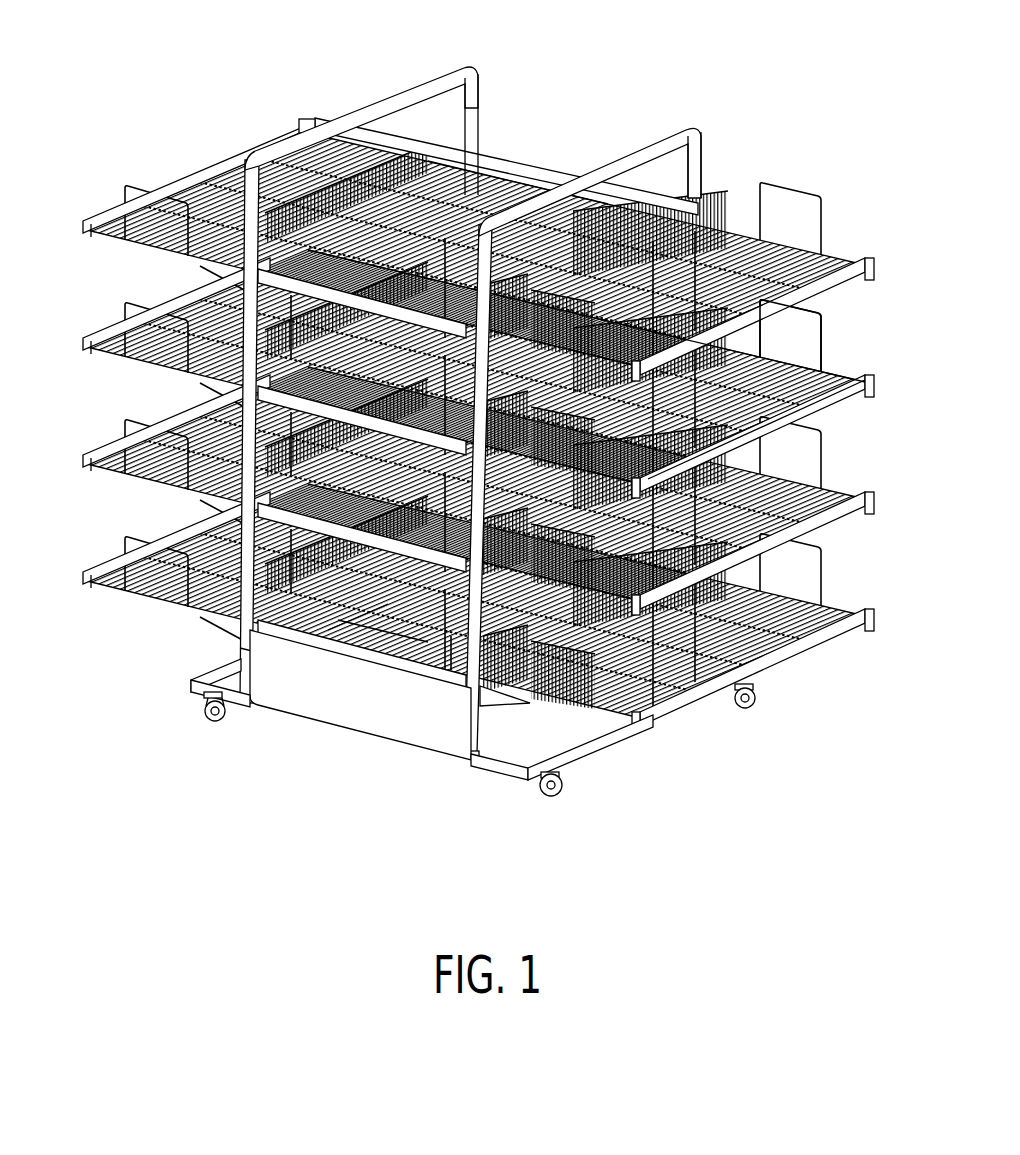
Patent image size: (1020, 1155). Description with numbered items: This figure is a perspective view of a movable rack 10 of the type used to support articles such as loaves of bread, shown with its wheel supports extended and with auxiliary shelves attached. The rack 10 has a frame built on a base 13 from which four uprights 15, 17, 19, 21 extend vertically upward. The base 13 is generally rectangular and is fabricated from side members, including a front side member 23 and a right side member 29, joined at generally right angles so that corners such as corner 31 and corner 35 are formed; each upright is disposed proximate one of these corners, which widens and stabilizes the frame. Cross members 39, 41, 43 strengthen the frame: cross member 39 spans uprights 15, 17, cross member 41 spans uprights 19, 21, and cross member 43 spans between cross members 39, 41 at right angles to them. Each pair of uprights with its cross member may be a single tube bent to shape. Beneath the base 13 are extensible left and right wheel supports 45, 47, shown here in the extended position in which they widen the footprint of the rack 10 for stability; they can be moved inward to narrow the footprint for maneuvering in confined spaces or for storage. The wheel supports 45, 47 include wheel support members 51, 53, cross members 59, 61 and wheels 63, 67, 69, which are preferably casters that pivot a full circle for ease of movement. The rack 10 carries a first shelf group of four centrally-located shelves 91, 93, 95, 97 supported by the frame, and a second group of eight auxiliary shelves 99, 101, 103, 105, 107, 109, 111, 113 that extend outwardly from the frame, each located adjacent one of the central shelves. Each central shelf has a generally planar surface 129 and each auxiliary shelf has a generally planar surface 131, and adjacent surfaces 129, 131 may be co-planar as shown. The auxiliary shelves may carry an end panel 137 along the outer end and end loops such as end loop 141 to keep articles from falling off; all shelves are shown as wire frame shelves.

The movable rack 10 is at (197, 57).
The base 13 is at (293, 710).
The upright 15 is at (238, 288).
The upright 17 is at (473, 92).
The upright 19 is at (463, 630).
The upright 21 is at (697, 158).
The front side member 23 is at (447, 730).
The right side member 29 is at (510, 707).
The corner 31 is at (233, 647).
The corner 35 is at (473, 710).
The cross member 39 is at (428, 68).
The cross member 41 is at (653, 123).
The cross member 43 is at (483, 145).
The left wheel support 45 is at (167, 681).
The right wheel support 47 is at (680, 723).
The wheel support member 51 is at (193, 683).
The wheel support member 53 is at (443, 650).
The cross member 59 is at (197, 662).
The cross member 61 is at (600, 727).
The wheel 63 is at (207, 705).
The wheel 67 is at (552, 778).
The wheel 69 is at (743, 692).
The shelf 91 is at (337, 613).
The shelf 93 is at (368, 625).
The shelf 95 is at (267, 160).
The shelf 97 is at (507, 173).
The auxiliary shelf 99 is at (107, 588).
The auxiliary shelf 101 is at (107, 467).
The auxiliary shelf 103 is at (103, 352).
The auxiliary shelf 105 is at (103, 230).
The auxiliary shelf 107 is at (773, 632).
The auxiliary shelf 109 is at (802, 507).
The auxiliary shelf 111 is at (797, 398).
The auxiliary shelf 113 is at (830, 268).
The planar surface 129 is at (250, 377).
The planar surface 131 is at (773, 353).
The end panel 137 is at (835, 390).
The end loop 141 is at (817, 328).